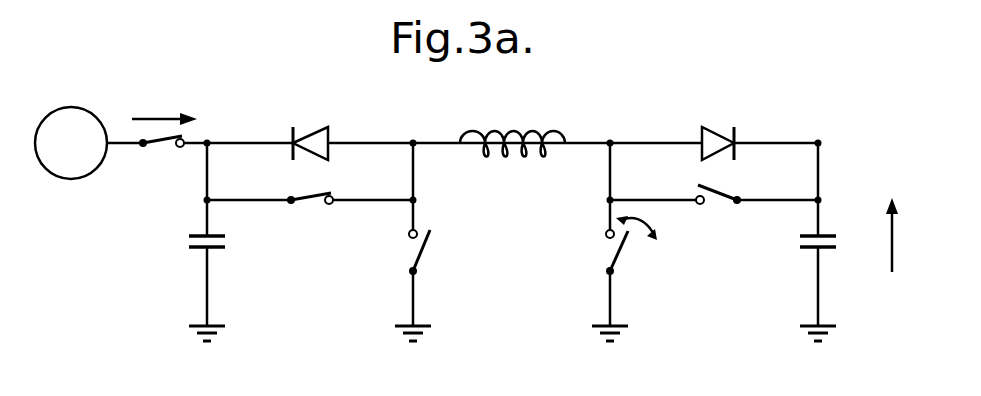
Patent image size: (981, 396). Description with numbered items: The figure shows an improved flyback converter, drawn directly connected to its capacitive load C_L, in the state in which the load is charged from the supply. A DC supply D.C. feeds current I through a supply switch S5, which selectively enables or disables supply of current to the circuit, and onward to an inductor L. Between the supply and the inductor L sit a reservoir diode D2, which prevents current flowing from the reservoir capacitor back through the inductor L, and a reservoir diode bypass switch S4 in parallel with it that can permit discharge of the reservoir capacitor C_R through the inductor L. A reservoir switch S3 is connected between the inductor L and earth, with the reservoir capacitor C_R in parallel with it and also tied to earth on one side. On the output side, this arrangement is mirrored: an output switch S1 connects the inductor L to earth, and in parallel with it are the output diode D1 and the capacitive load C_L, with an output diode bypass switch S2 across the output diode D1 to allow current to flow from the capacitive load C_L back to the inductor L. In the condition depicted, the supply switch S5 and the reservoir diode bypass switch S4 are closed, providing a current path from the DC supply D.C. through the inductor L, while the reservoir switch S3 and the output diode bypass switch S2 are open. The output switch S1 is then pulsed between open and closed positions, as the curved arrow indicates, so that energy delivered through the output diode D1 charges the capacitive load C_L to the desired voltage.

The DC supply D.C. is at (71, 143).
The current I is at (164, 108).
The supply switch S5 is at (161, 163).
The reservoir diode D2 is at (310, 124).
The reservoir diode bypass switch S4 is at (310, 219).
The reservoir capacitor CR is at (183, 241).
The reservoir switch S3 is at (436, 252).
The inductor L is at (512, 127).
The output switch S1 is at (612, 245).
The output diode bypass switch S2 is at (718, 217).
The output diode D1 is at (718, 124).
The capacitive load CL is at (849, 235).